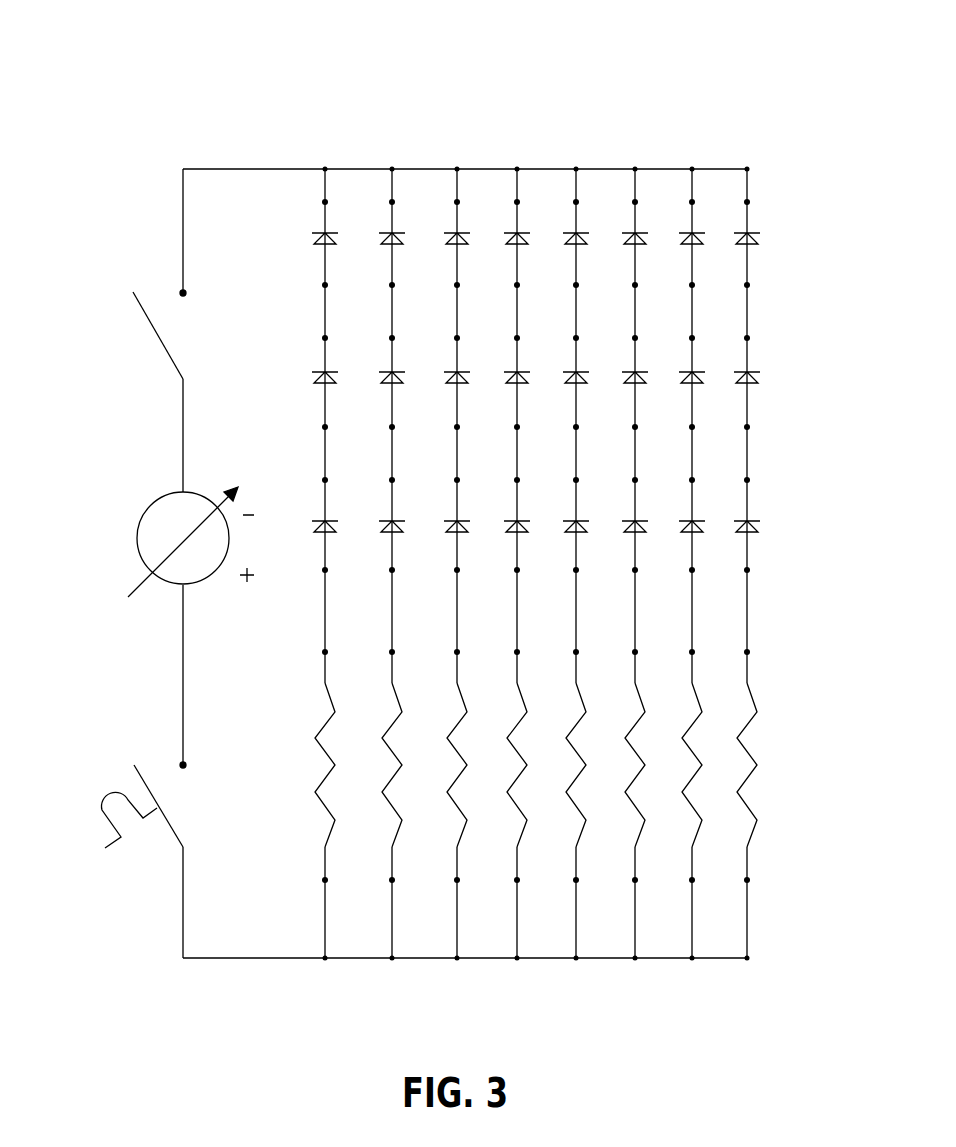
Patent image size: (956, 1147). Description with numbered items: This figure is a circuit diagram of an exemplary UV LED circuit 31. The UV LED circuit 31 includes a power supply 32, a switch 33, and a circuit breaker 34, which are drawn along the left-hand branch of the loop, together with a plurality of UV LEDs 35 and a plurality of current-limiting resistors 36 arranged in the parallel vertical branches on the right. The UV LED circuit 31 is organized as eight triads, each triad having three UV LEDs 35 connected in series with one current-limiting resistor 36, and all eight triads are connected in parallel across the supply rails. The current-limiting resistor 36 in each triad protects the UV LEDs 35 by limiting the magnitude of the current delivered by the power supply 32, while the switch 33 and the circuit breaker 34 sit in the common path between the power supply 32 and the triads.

The UV LED circuit 31 is at (162, 70).
The power supply 32 is at (131, 529).
The switch 33 is at (147, 344).
The circuit breaker 34 is at (108, 872).
The UV LEDs 35 is at (775, 235).
The current-limiting resistors 36 is at (775, 735).